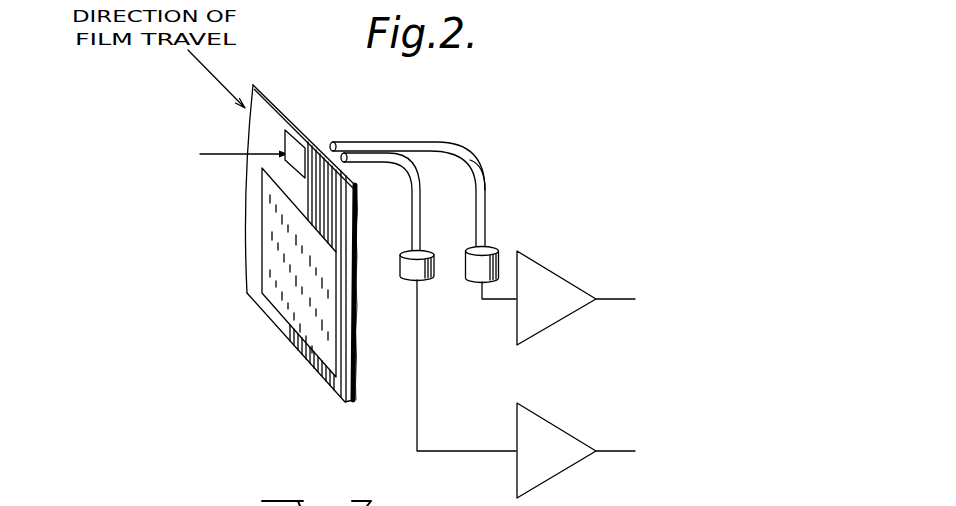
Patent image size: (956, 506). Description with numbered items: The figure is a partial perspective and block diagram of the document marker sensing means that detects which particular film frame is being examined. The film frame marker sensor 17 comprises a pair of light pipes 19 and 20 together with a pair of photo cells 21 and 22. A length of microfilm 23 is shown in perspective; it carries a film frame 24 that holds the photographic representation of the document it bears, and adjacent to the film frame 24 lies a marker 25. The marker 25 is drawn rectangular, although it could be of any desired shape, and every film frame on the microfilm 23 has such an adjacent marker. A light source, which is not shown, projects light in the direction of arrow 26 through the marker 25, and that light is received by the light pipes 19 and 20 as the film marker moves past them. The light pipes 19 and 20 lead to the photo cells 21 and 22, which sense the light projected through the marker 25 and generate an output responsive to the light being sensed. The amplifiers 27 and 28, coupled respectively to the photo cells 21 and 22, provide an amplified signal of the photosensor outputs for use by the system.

The film frame marker sensor 17 is at (369, 140).
The light pipe 19 is at (484, 172).
The light pipe 20 is at (414, 200).
The photo cell 21 is at (494, 250).
The photo cell 22 is at (410, 274).
The microfilm 23 is at (275, 98).
The film frame 24 is at (292, 305).
The marker 25 is at (289, 146).
The arrow 26 is at (239, 153).
The amplifier 27 is at (563, 273).
The amplifier 28 is at (565, 470).